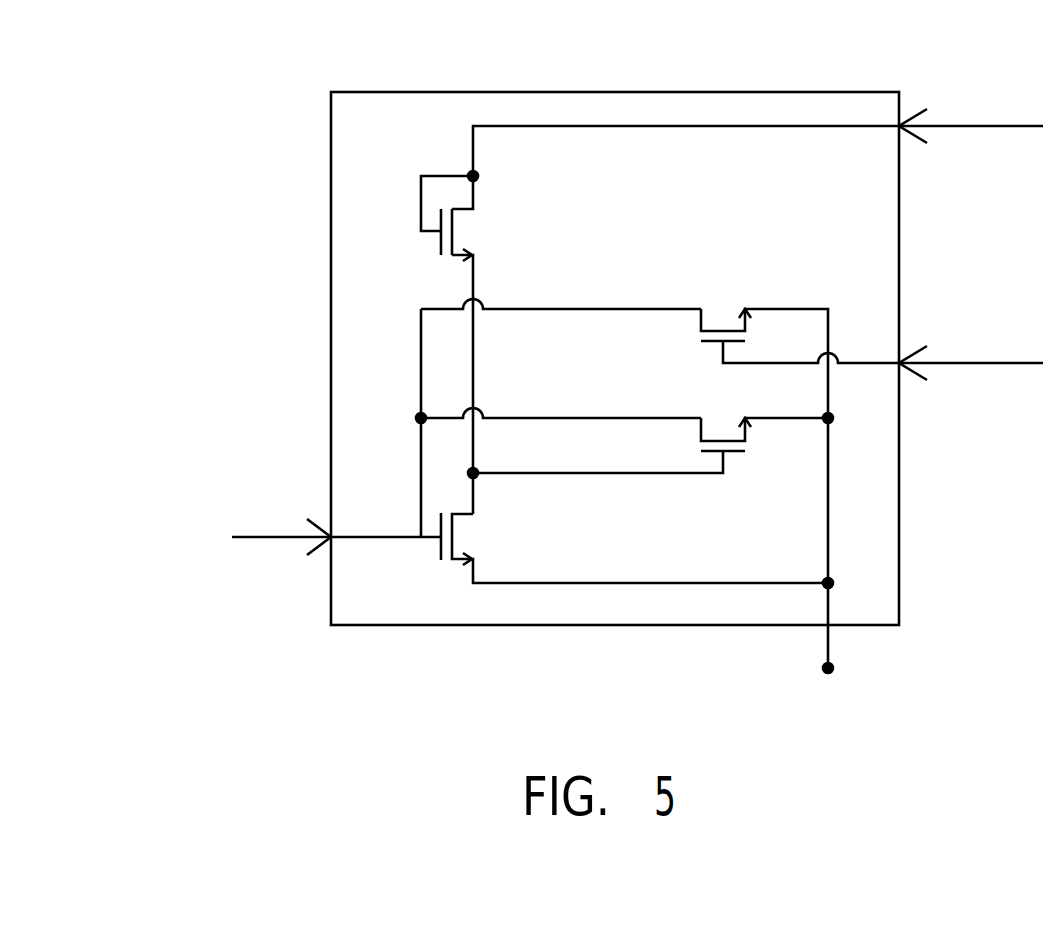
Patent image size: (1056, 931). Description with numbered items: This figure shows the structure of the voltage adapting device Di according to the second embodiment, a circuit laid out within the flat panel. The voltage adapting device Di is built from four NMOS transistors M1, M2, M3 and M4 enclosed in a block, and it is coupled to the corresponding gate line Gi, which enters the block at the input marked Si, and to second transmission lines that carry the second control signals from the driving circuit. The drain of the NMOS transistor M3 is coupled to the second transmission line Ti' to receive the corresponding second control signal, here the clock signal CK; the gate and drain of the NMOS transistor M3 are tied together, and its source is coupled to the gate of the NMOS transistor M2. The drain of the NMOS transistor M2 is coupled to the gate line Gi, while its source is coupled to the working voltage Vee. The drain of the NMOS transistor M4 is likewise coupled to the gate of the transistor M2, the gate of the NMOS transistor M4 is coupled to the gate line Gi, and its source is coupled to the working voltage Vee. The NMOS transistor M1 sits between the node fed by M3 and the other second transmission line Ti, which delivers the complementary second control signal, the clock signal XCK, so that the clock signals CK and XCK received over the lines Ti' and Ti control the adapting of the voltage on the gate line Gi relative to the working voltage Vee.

The voltage adapting device Di is at (173, 78).
The second transmission line Ti' is at (983, 78).
The clock signal CK is at (755, 150).
The second transmission line Ti is at (980, 317).
The clock signal XCK is at (925, 387).
The gate line Gi is at (272, 537).
The signal input terminal Si is at (312, 557).
The NMOS transistor M1 is at (872, 473).
The NMOS transistor M2 is at (650, 433).
The NMOS transistor M3 is at (464, 345).
The NMOS transistor M4 is at (532, 550).
The working voltage Vee is at (830, 690).